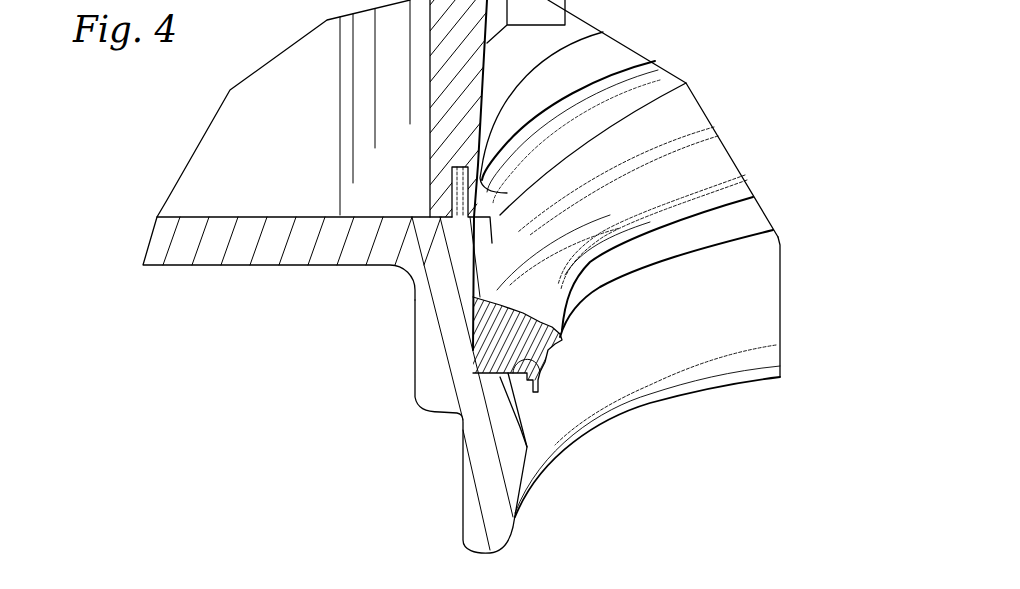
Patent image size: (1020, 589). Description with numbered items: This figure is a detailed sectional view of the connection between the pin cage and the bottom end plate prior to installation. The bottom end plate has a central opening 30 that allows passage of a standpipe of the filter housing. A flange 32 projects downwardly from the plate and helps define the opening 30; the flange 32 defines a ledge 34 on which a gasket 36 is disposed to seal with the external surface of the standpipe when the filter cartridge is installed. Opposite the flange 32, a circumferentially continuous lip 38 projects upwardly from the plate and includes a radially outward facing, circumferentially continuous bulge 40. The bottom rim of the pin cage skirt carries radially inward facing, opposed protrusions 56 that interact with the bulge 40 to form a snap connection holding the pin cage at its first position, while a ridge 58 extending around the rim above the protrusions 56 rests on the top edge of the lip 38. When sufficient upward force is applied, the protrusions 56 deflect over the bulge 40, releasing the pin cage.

The central opening 30 is at (570, 432).
The flange 32 is at (417, 383).
The ledge 34 is at (540, 370).
The gasket 36 is at (523, 305).
The lip 38 is at (480, 206).
The bulge 40 is at (452, 190).
The protrusions 56 is at (460, 248).
The ridge 58 is at (688, 82).